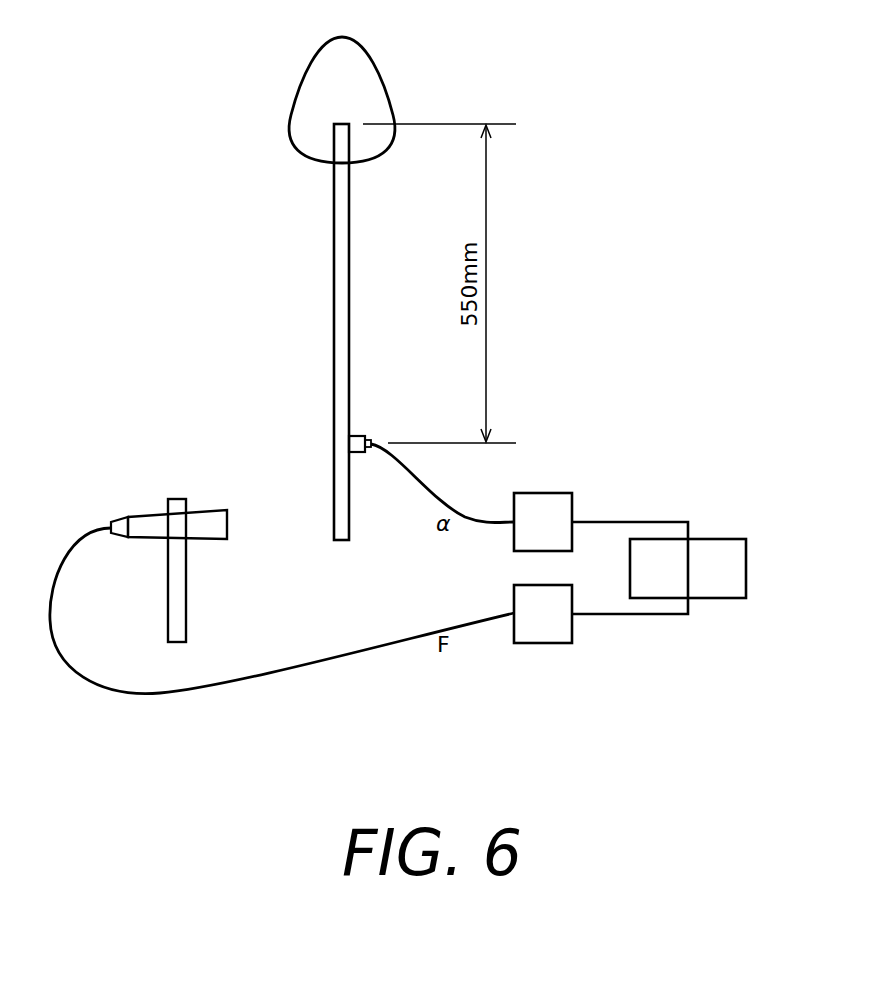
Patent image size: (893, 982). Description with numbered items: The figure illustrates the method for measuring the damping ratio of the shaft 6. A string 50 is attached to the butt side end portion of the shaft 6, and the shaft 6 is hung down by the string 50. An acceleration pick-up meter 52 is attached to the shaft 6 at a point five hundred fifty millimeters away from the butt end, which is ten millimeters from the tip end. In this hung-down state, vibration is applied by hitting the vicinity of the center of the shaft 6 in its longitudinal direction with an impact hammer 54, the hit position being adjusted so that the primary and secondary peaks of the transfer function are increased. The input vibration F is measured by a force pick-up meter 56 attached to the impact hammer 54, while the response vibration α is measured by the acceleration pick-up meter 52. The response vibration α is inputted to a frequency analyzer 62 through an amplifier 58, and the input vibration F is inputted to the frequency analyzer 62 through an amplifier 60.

The string 50 is at (378, 62).
The shaft 6 is at (340, 310).
The acceleration pick-up meter 52 is at (356, 453).
The impact hammer 54 is at (180, 580).
The force pick-up meter 56 is at (119, 517).
The amplifier 58 is at (543, 492).
The amplifier 60 is at (543, 644).
The frequency analyzer 62 is at (716, 538).